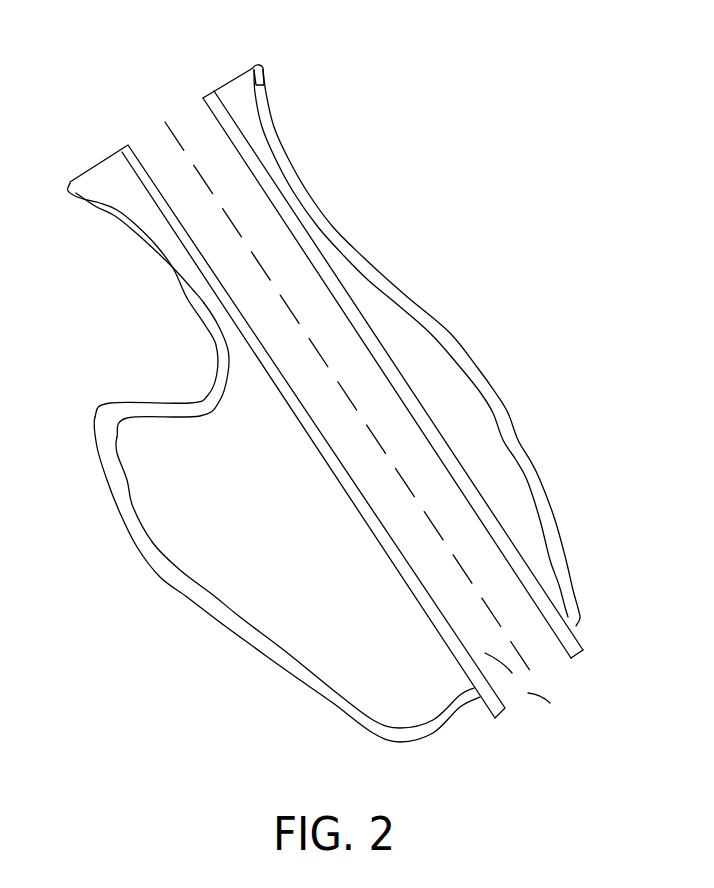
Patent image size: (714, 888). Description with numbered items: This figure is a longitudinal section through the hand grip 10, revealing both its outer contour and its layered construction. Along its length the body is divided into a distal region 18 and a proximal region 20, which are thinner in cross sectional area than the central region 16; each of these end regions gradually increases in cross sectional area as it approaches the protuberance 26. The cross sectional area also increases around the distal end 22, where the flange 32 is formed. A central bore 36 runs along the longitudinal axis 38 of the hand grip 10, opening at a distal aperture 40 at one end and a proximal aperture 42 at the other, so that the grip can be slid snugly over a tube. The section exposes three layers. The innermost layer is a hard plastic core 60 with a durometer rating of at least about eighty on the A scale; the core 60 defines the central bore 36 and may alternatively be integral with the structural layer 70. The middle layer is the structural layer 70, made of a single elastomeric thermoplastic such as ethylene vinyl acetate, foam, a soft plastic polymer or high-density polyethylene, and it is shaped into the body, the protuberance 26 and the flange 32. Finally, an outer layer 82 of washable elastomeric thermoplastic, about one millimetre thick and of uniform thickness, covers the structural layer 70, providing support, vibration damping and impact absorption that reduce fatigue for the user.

The hand grip 10 is at (497, 270).
The central region 16 is at (498, 325).
The distal region 18 is at (308, 143).
The proximal region 20 is at (567, 532).
The distal end 22 is at (207, 97).
The protuberance 26 is at (452, 392).
The flange 32 is at (258, 80).
The central bore 36 is at (485, 653).
The longitudinal axis 38 is at (540, 673).
The distal aperture 40 is at (152, 140).
The proximal aperture 42 is at (528, 693).
The core 60 is at (148, 190).
The structural layer 70 is at (242, 358).
The outer layer 82 is at (128, 512).